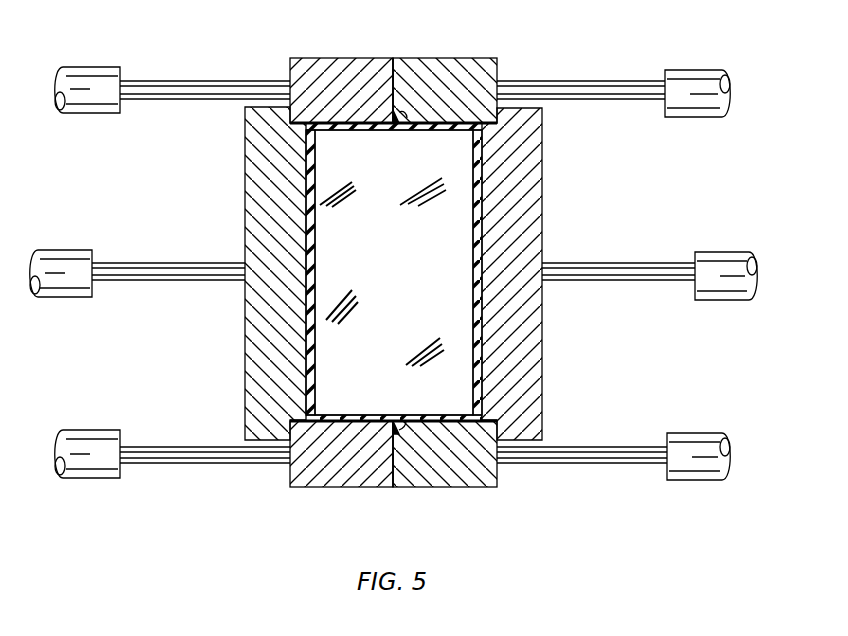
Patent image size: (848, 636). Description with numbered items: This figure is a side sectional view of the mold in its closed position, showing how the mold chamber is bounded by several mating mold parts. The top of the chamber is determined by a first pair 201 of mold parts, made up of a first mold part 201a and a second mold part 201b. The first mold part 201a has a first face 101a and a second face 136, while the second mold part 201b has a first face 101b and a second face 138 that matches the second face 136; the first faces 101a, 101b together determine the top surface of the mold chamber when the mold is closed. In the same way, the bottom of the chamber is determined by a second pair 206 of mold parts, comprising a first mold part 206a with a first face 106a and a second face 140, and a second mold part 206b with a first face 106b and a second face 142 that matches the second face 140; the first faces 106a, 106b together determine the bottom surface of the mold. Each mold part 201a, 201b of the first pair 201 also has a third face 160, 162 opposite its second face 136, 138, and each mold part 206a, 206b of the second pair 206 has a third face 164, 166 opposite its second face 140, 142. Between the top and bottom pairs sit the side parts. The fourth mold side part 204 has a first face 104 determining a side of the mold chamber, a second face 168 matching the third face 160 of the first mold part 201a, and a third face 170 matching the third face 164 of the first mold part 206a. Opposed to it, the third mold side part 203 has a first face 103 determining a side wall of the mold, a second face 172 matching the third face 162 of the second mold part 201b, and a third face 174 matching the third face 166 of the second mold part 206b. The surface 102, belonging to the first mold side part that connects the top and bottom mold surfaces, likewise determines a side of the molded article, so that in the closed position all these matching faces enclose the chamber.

The first pair of mold parts 201 is at (742, 95).
The second pair of mold parts 206 is at (742, 455).
The first mold part of the first pair 201a is at (310, 57).
The second mold part of the first pair 201b is at (483, 57).
The second face of first mold part 201a 136 is at (385, 58).
The second face of second mold part 201b 138 is at (408, 122).
The second face of fourth mold side part 204 168 is at (298, 123).
The second face of third mold side part 203 172 is at (490, 123).
The third face of first mold part 201a 160 is at (275, 188).
The third face of second mold part 201b 162 is at (512, 189).
The third face of first mold part 206a 164 is at (292, 428).
The third face of second mold part 206b 166 is at (496, 428).
The fourth mold side part 204 is at (245, 193).
The third mold side part 203 is at (542, 178).
The first face of first mold part 201a 101a is at (345, 132).
The first face of second mold part 201b 101b is at (461, 134).
The first face of fourth mold side part 204 104 is at (314, 263).
The first face of third mold side part 203 103 is at (473, 298).
The surface of first mold side part 102 is at (405, 279).
The first face of first mold part 206a 106a is at (330, 415).
The first face of second mold part 206b 106b is at (450, 414).
The second face of second mold part 206b 142 is at (402, 421).
The second face of first mold part 206a 140 is at (387, 487).
The third face of fourth mold side part 204 170 is at (298, 423).
The third face of third mold side part 203 174 is at (492, 431).
The first mold part of the second pair 206a is at (325, 487).
The second mold part of the second pair 206b is at (466, 487).